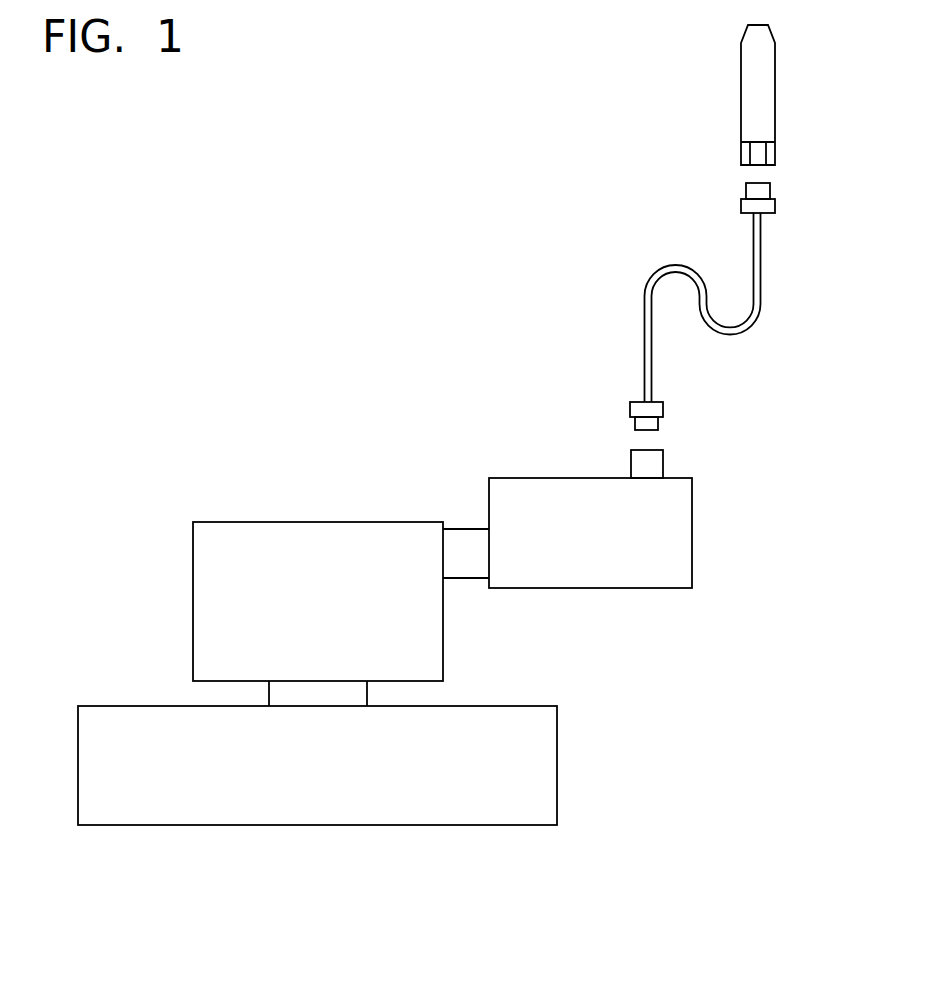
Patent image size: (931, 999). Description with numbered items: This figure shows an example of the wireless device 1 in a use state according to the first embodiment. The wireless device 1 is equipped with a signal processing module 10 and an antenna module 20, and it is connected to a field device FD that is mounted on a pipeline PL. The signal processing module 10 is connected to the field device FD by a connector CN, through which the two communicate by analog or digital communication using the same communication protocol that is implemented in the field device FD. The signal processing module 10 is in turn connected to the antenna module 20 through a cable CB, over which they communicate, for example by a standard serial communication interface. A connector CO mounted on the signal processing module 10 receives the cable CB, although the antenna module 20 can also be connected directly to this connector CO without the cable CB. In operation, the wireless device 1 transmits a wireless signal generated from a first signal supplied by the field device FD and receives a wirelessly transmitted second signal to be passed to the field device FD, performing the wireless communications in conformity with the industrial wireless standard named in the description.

The wireless device 1 is at (480, 186).
The signal processing module 10 is at (543, 478).
The antenna module 20 is at (740, 97).
The cable CB is at (733, 338).
The connector CO is at (665, 461).
The connector CN is at (465, 529).
The field device FD is at (318, 522).
The pipeline PL is at (130, 706).